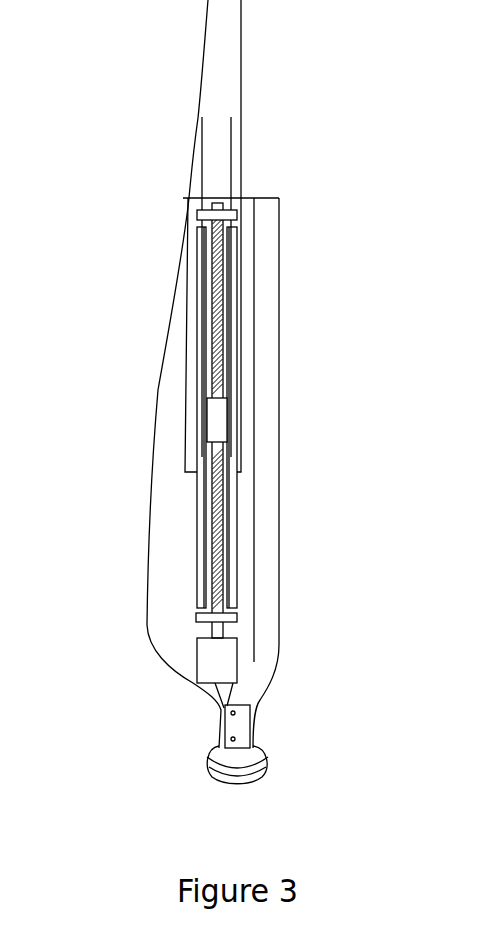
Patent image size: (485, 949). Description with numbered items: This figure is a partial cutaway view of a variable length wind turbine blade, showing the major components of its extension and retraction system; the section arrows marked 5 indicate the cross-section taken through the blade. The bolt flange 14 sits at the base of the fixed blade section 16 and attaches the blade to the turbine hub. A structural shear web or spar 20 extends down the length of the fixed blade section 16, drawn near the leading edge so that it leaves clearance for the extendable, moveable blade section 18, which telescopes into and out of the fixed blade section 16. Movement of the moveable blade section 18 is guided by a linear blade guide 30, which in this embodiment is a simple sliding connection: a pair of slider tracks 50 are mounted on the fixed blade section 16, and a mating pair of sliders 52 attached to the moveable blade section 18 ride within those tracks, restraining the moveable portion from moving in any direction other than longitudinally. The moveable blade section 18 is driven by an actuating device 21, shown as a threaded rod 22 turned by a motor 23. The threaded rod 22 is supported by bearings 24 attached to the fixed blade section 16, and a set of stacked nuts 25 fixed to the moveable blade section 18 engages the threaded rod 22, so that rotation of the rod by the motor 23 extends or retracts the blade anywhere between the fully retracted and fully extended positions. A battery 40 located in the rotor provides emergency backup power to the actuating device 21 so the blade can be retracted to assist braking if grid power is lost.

The bolt flange 14 is at (257, 780).
The fixed blade section 16 is at (267, 453).
The moveable blade section 18 is at (230, 62).
The spar 20 is at (254, 400).
The actuating device 21 is at (192, 625).
The threaded rod 22 is at (217, 520).
The motor 23 is at (222, 662).
The bearings 24 is at (241, 200).
The stacked nuts 25 is at (215, 420).
The linear blade guide 30 is at (190, 567).
The battery 40 is at (240, 727).
The slider tracks 50 is at (200, 541).
The sliders 52 is at (201, 145).
The section line 5- 5 is at (142, 293).